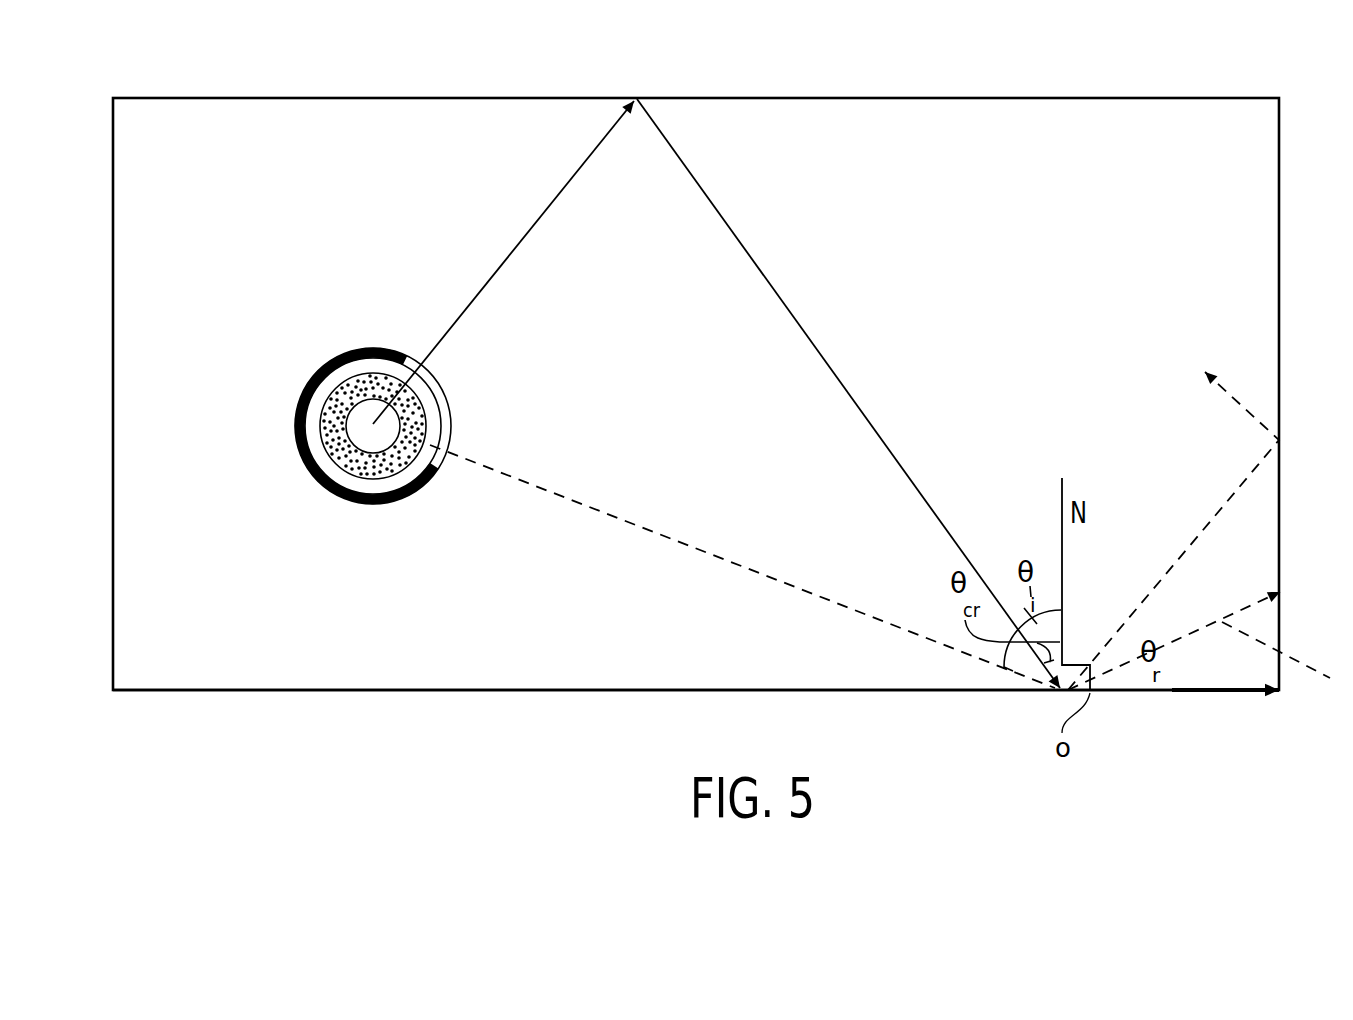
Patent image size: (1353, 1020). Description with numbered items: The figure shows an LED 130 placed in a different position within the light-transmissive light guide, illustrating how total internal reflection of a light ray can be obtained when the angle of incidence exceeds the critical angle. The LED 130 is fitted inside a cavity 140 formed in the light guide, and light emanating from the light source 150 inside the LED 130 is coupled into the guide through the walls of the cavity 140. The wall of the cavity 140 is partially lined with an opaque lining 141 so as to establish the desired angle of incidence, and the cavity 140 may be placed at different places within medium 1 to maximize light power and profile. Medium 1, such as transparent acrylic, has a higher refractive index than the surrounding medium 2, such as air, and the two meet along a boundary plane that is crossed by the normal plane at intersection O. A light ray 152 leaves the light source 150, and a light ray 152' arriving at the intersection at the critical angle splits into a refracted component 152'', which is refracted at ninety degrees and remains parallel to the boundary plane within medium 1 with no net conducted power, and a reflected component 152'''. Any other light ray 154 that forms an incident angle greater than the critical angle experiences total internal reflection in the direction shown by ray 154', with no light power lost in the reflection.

The medium 1 is at (385, 683).
The medium 2 is at (452, 693).
The LED 130 is at (424, 425).
The cavity 140 is at (436, 381).
The opaque lining 141 is at (313, 475).
The light source 150 is at (365, 408).
The light ray 152 is at (503, 262).
The light ray 152' is at (848, 393).
The refracted component 152'' is at (1236, 731).
The reflected component 152''' is at (1174, 531).
The light ray 154 is at (742, 566).
The ray 154' is at (1284, 672).